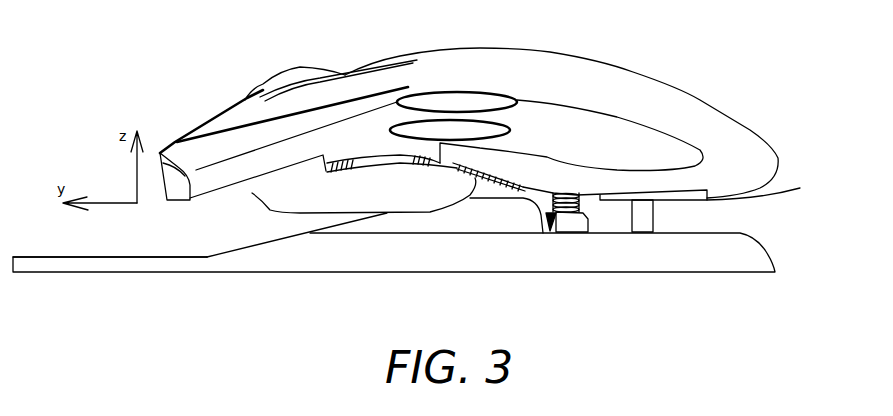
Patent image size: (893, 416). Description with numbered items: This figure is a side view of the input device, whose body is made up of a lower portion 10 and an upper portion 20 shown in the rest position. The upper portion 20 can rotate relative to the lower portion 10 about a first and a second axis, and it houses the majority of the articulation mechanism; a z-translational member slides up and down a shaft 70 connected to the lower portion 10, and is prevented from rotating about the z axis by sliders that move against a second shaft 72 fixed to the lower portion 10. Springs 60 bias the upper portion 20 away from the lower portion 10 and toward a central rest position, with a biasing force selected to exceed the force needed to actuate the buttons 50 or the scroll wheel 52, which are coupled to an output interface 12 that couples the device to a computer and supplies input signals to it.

The lower portion 10 is at (753, 255).
The output interface 12 is at (105, 260).
The upper portion 20 is at (697, 103).
The buttons 50 is at (233, 120).
The scroll wheel 52 is at (260, 82).
The springs 60 is at (543, 233).
The shaft 70 is at (570, 210).
The second shaft 72 is at (652, 218).